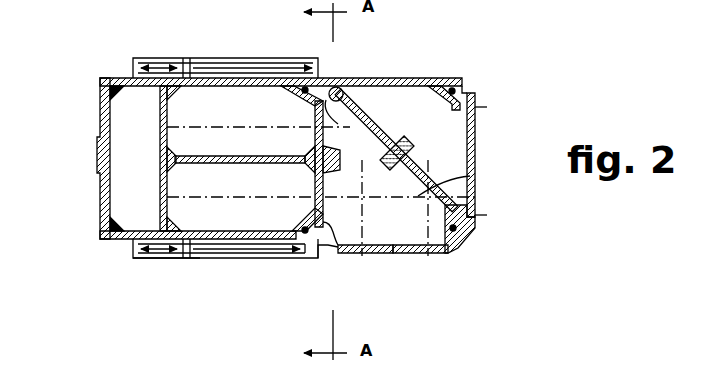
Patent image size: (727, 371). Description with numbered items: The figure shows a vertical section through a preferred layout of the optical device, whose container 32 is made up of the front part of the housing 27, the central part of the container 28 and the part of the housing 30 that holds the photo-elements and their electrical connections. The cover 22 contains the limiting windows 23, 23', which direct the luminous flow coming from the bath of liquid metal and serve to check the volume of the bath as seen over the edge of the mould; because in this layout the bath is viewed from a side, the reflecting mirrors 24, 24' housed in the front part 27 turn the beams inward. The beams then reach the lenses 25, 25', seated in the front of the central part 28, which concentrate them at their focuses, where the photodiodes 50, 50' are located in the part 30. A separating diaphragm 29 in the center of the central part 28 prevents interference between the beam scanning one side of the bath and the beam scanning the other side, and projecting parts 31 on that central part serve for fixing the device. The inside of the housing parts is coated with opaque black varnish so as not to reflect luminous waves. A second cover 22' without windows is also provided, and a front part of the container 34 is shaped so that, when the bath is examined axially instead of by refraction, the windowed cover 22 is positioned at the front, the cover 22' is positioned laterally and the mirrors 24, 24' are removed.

The cover 22 is at (470, 263).
The cover without windows 22' is at (506, 82).
The window 23 is at (365, 277).
The window 23' is at (420, 277).
The reflecting mirror 24 is at (392, 117).
The reflecting mirror 24' is at (481, 196).
The lens 25 is at (346, 76).
The lens 25' is at (488, 206).
The front part of the housing 27 is at (384, 217).
The central part of the container 28 is at (246, 113).
The separating diaphragm 29 is at (262, 165).
The part of the housing holding the photo-elements 30 is at (127, 126).
The projecting parts 31 is at (182, 257).
The container 32 is at (101, 243).
The front part of the container 34 is at (482, 142).
The photodiode 50 is at (225, 70).
The photodiode 50' is at (225, 249).